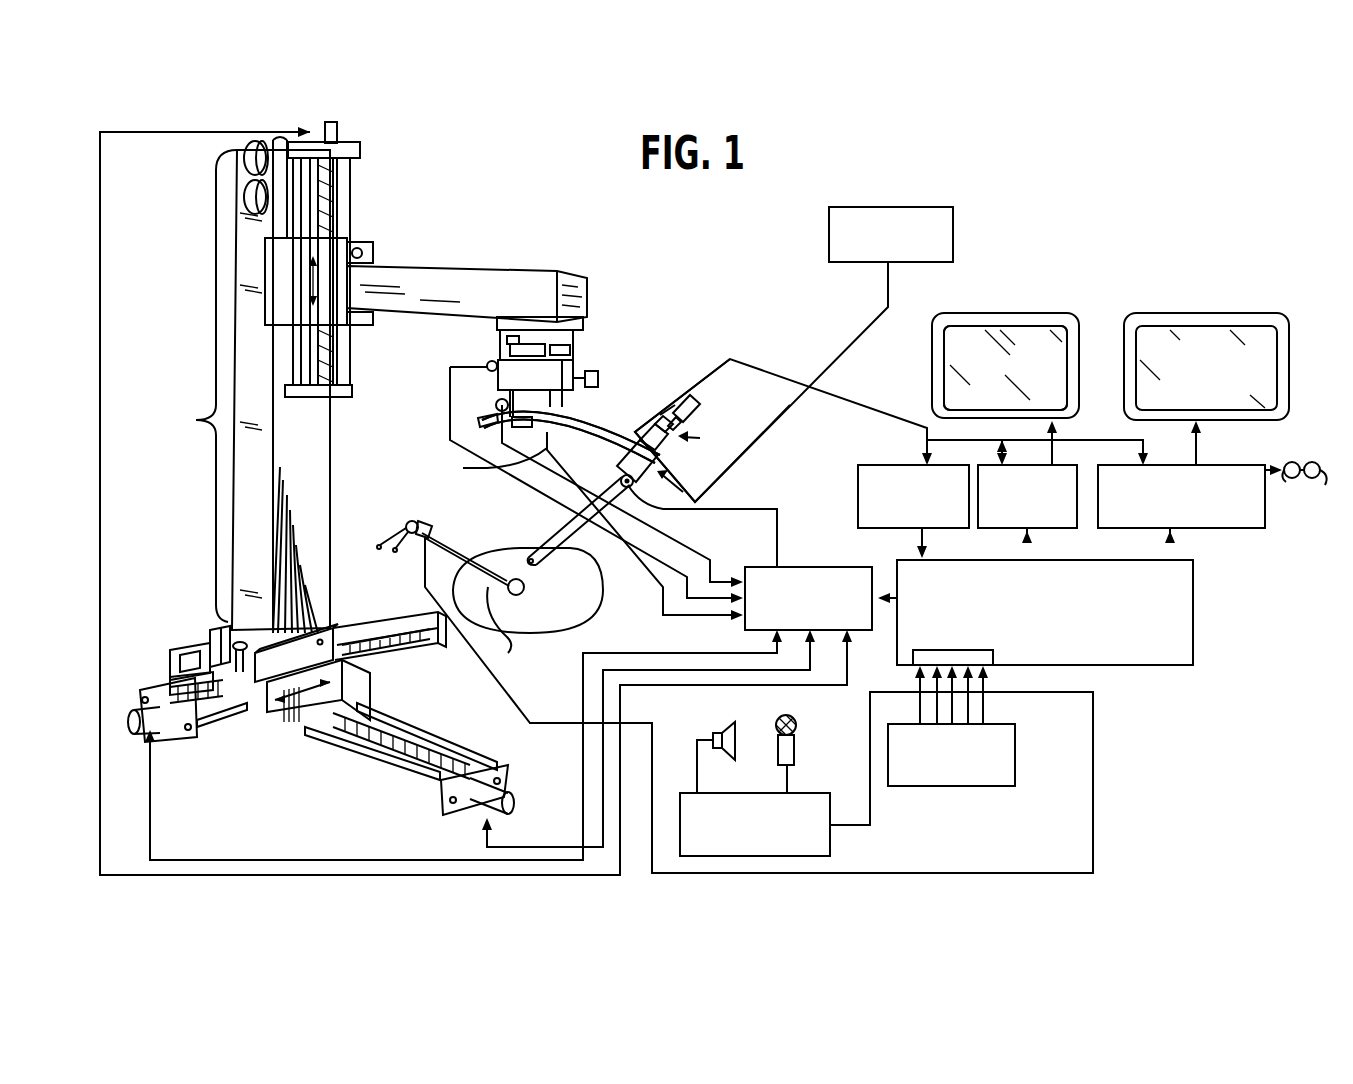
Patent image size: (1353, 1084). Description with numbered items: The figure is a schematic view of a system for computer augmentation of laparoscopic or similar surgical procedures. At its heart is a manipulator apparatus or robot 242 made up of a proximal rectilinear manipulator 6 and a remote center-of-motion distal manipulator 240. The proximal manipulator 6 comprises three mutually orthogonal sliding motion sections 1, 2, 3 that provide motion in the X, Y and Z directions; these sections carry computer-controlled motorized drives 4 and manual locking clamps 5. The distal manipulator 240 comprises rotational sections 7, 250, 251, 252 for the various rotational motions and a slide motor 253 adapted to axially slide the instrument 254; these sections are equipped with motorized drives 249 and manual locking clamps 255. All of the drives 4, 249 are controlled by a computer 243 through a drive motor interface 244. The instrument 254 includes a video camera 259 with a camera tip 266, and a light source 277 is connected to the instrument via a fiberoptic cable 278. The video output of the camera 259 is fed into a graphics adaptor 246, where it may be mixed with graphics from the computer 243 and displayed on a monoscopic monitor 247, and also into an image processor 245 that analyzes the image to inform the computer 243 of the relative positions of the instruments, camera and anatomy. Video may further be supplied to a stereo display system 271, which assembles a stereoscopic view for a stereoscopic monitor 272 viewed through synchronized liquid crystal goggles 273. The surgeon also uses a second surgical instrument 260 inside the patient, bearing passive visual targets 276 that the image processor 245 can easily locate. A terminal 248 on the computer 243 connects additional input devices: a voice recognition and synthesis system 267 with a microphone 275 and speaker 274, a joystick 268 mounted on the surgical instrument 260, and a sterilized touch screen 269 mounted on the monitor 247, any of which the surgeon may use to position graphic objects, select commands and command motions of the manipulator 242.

The sliding motion section 1 is at (267, 722).
The sliding motion section 2 is at (168, 682).
The sliding motion section 3 is at (372, 245).
The motorized drives 4 is at (340, 133).
The manual locking clamps 5 is at (370, 258).
The proximal rectilinear manipulator 6 is at (251, 385).
The rotational section 7 is at (575, 362).
The remote center-of-motion distal manipulator 240 is at (437, 322).
The manipulator apparatus 242 is at (510, 267).
The computer 243 is at (1193, 608).
The drive motor interface 244 is at (808, 565).
The image processor 245 is at (898, 528).
The graphics adaptor 246 is at (1058, 528).
The monoscopic monitor 247 is at (932, 362).
The terminal 248 is at (970, 650).
The motorized drives 249 is at (489, 362).
The rotational section 250 is at (578, 400).
The rotational section 251 is at (597, 430).
The rotational section 252 is at (617, 463).
The slide motor 253 is at (665, 415).
The instrument 254 is at (603, 543).
The manual locking clamps 255 is at (600, 378).
The video camera 259 is at (698, 408).
The second surgical instrument 260 is at (447, 542).
The camera tip 266 is at (523, 563).
The voice recognition and synthesis system 267 is at (830, 845).
The joystick 268 is at (427, 522).
The sterilized touch screen 269 is at (1028, 325).
The stereo display system 271 is at (1240, 528).
The stereoscopic monitor 272 is at (1203, 325).
The stereoscopic liquid crystal goggles 273 is at (1308, 462).
The speaker 274 is at (725, 728).
The microphone 275 is at (797, 728).
The passive visual targets 276 is at (528, 615).
The light source 277 is at (958, 240).
The fiberoptic cable 278 is at (788, 413).